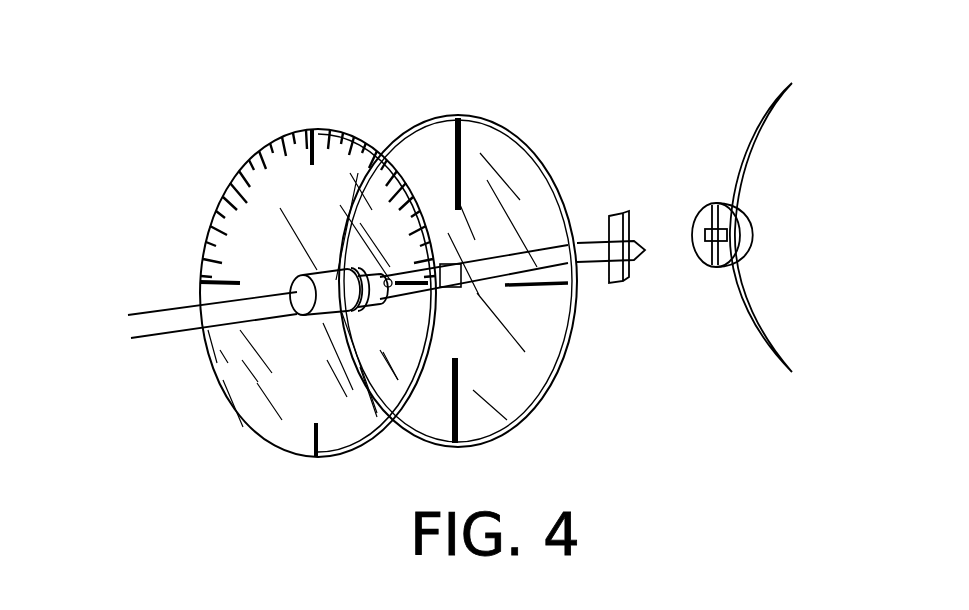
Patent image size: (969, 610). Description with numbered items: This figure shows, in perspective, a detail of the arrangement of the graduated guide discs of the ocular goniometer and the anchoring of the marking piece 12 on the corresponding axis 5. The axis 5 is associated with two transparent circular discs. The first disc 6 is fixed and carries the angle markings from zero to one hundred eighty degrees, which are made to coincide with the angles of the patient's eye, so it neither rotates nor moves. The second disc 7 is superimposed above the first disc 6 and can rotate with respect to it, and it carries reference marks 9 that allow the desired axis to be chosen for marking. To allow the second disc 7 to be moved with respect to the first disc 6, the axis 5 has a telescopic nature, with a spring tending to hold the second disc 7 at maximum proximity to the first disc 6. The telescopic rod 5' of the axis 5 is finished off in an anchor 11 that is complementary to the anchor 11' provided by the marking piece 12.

The axis 5 is at (224, 257).
The first disc 6 is at (283, 280).
The second disc 7 is at (397, 140).
The reference marks 9 is at (463, 152).
The telescopic rod 5' is at (512, 198).
The anchor 11 is at (640, 325).
The marking piece 12 is at (725, 195).
The anchor 11' is at (787, 262).